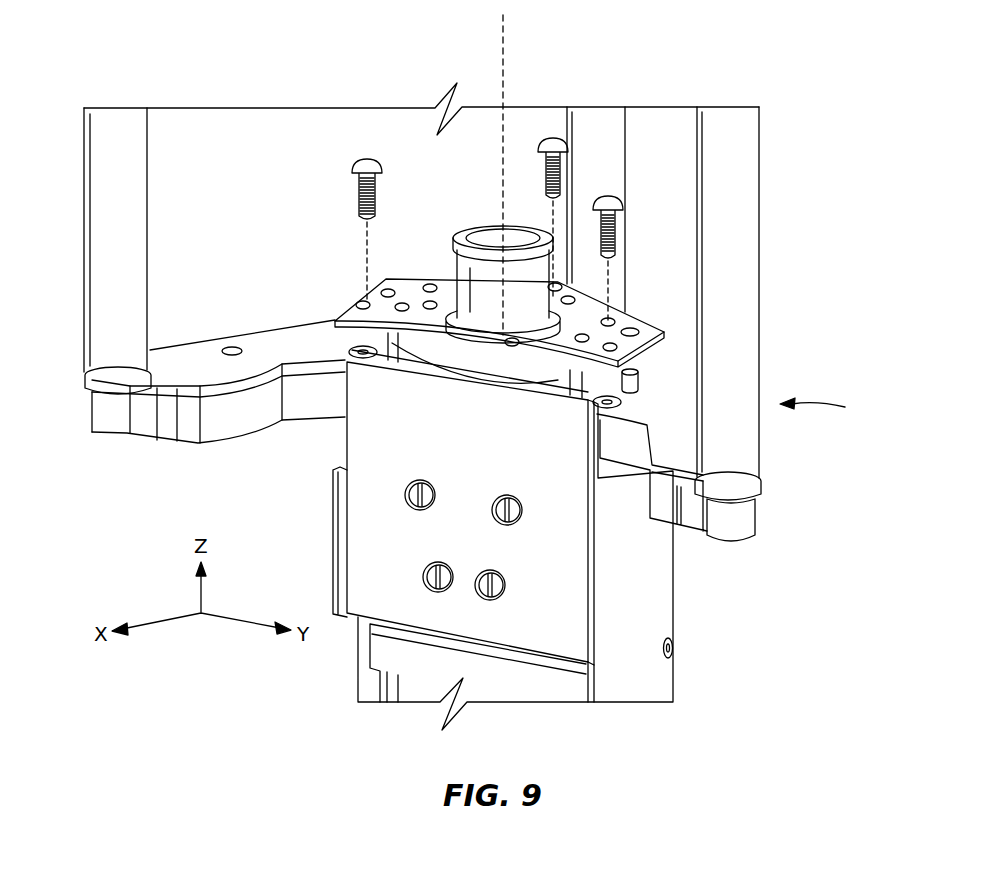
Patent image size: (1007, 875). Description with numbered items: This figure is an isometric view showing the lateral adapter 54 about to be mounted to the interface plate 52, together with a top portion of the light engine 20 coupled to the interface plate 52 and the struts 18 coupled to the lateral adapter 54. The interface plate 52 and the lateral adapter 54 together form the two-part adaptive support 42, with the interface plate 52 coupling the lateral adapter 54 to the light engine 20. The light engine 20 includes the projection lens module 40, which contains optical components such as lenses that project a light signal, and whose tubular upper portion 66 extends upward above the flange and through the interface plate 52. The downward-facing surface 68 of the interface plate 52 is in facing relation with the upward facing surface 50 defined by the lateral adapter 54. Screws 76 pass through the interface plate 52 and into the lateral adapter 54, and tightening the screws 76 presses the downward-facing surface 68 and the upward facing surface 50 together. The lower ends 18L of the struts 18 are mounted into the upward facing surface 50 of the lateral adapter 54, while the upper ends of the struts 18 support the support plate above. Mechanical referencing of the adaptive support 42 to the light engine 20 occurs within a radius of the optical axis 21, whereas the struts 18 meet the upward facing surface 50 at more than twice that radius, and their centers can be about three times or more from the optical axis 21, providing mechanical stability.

The struts 18 is at (137, 142).
The lower ends of struts 18L is at (97, 362).
The light engine 20 is at (660, 618).
The optical axis 21 is at (505, 73).
The projection lens module 40 is at (489, 263).
The tubular upper portion 66 is at (456, 265).
The adaptive support 42 is at (827, 408).
The upward facing surface 50 is at (218, 399).
The interface plate 52 is at (347, 313).
The lateral adapter 54 is at (165, 428).
The downward-facing surface 68 is at (357, 353).
The screws 76 is at (366, 155).